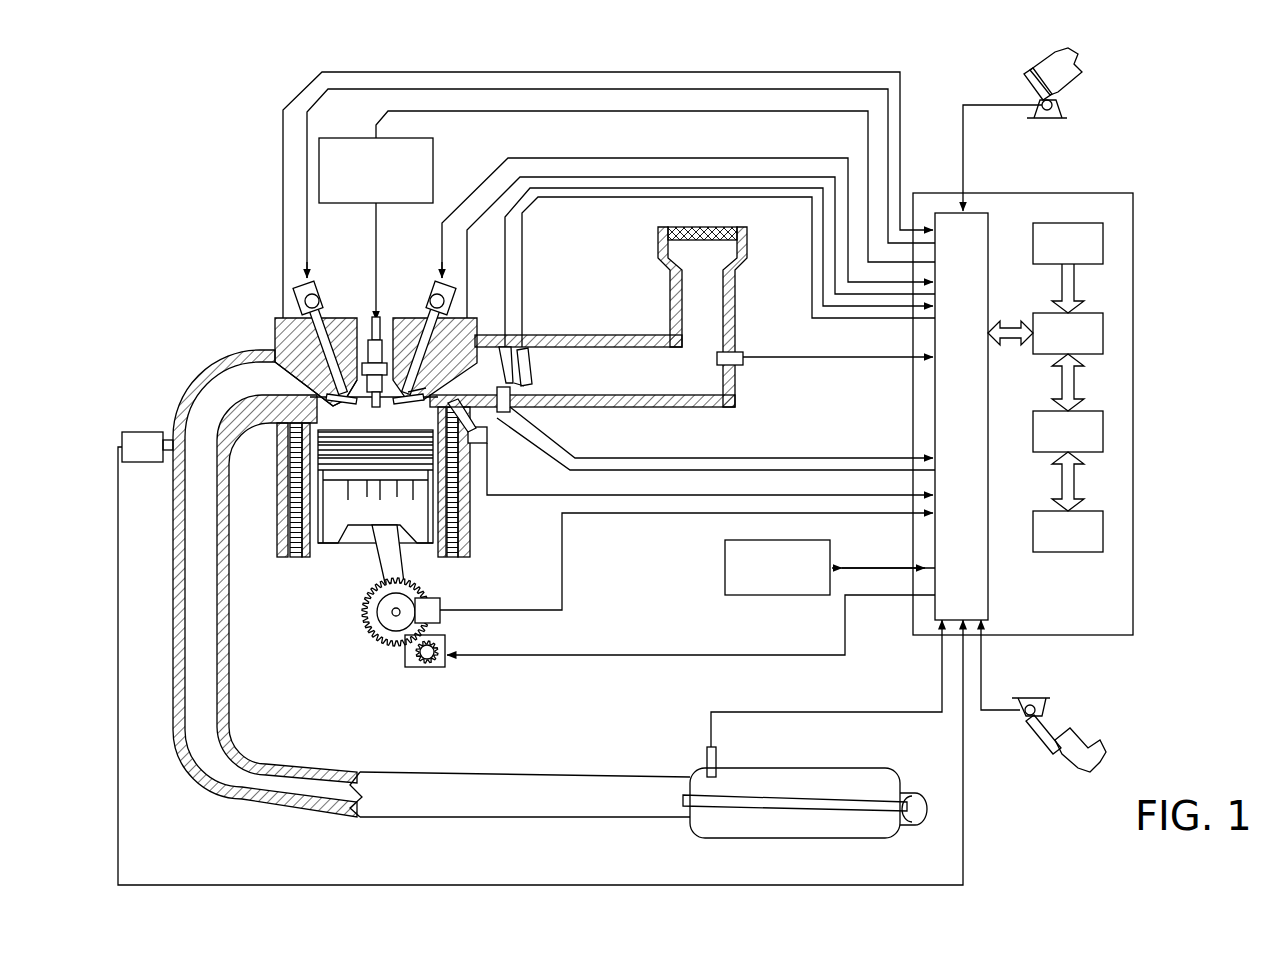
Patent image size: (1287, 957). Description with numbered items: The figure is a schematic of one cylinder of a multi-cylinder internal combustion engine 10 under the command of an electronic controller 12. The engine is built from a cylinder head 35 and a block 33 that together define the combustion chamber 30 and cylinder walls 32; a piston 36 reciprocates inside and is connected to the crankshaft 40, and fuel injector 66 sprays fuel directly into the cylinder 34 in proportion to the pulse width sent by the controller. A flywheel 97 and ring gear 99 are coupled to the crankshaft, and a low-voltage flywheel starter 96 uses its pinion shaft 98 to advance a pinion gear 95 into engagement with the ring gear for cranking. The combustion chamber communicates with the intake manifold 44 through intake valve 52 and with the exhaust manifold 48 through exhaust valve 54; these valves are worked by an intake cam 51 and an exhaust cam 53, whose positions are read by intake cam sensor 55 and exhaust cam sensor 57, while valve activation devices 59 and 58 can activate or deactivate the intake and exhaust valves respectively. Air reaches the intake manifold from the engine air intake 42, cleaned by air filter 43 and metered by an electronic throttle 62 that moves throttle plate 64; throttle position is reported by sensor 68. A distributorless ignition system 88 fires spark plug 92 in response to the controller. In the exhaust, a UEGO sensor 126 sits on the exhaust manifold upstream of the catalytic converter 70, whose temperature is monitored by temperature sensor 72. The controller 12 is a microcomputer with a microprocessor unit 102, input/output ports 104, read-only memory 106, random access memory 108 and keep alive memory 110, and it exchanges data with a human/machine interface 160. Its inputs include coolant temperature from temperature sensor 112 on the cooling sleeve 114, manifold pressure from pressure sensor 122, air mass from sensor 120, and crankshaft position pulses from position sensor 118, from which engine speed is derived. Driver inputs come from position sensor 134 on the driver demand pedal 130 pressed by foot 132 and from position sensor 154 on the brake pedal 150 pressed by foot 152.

The internal combustion engine 10 is at (214, 270).
The electronic controller 12 is at (1133, 193).
The combustion chamber 30 is at (352, 482).
The cylinder walls 32 is at (320, 548).
The block 33 is at (272, 455).
The cylinder 34 is at (348, 552).
The cylinder head 35 is at (272, 318).
The piston 36 is at (372, 410).
The crankshaft 40 is at (371, 632).
The engine air intake 42 is at (650, 250).
The air filter 43 is at (725, 242).
The intake manifold 44 is at (504, 384).
The exhaust manifold 48 is at (255, 390).
The intake cam 51 is at (434, 302).
The intake valve 52 is at (414, 380).
The exhaust cam 53 is at (312, 300).
The exhaust valve 54 is at (333, 392).
The intake cam sensor 55 is at (452, 300).
The exhaust cam sensor 57 is at (300, 300).
The valve activation device 58 is at (320, 302).
The valve activation device 59 is at (430, 304).
The electronic throttle 62 is at (533, 374).
The throttle plate 64 is at (526, 384).
The fuel injector 66 is at (488, 443).
The throttle position sensor 68 is at (503, 348).
The catalytic converter 70 is at (730, 768).
The temperature sensor 72 is at (717, 748).
The distributorless ignition system 88 is at (334, 138).
The spark plug 92 is at (380, 330).
The pinion gear 95 is at (433, 663).
The flywheel starter 96 is at (442, 665).
The flywheel 97 is at (360, 620).
The pinion shaft 98 is at (420, 663).
The ring gear 99 is at (386, 657).
The microprocessor unit 102 is at (1103, 333).
The input/output ports 104 is at (1000, 211).
The read-only memory 106 is at (1103, 243).
The random access memory 108 is at (1103, 432).
The keep alive memory 110 is at (1103, 532).
The temperature sensor 112 is at (710, 469).
The cooling sleeve 114 is at (462, 512).
The position sensor 118 is at (440, 600).
The air mass sensor 120 is at (737, 352).
The pressure sensor 122 is at (513, 410).
The Universal Exhaust Gas Oxygen (UEGO) sensor 126 is at (122, 437).
The driver demand pedal 130 is at (1022, 84).
The foot 132 is at (1078, 67).
The position sensor 134 is at (1062, 107).
The brake pedal 150 is at (1057, 756).
The foot 152 is at (1090, 733).
The position sensor 154 is at (1022, 710).
The human/machine interface 160 is at (830, 567).